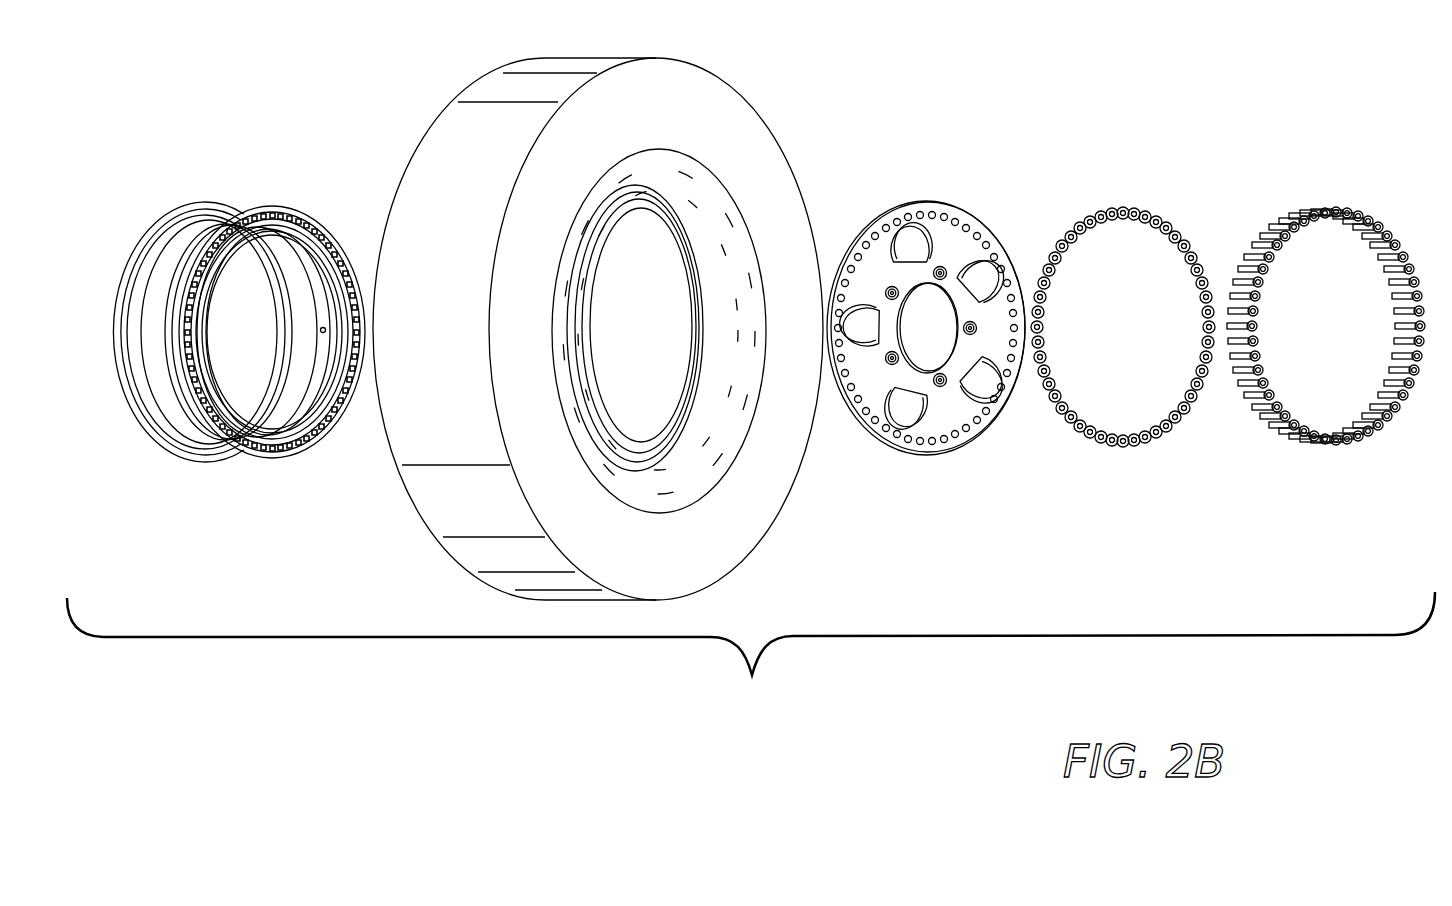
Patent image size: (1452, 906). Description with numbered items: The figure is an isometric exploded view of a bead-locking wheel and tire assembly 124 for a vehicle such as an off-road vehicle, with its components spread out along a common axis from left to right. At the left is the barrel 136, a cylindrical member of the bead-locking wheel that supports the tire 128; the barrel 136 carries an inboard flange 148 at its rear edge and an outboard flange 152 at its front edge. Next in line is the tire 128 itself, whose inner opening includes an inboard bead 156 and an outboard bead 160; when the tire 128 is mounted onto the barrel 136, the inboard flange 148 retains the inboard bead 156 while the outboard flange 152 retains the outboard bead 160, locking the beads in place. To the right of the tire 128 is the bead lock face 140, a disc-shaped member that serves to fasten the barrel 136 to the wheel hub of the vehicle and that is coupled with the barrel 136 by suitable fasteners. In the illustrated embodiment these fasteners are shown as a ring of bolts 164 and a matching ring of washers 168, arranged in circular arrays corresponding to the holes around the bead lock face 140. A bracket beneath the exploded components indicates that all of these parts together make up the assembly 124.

The bead-locking wheel and tire assembly 124 is at (751, 651).
The tire 128 is at (604, 325).
The barrel 136 is at (217, 445).
The bead lock face 140 is at (967, 225).
The inboard flange 148 is at (167, 218).
The outboard flange 152 is at (302, 215).
The inboard bead 156 is at (608, 398).
The outboard bead 160 is at (695, 368).
The bolts 164 is at (1380, 228).
The washers 168 is at (1168, 433).